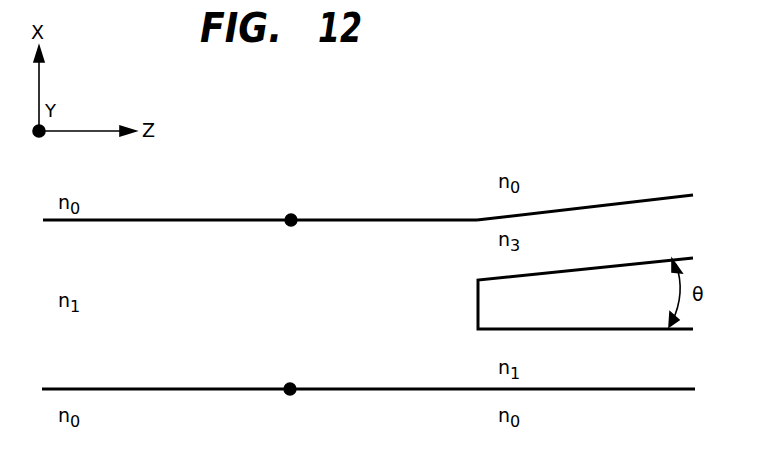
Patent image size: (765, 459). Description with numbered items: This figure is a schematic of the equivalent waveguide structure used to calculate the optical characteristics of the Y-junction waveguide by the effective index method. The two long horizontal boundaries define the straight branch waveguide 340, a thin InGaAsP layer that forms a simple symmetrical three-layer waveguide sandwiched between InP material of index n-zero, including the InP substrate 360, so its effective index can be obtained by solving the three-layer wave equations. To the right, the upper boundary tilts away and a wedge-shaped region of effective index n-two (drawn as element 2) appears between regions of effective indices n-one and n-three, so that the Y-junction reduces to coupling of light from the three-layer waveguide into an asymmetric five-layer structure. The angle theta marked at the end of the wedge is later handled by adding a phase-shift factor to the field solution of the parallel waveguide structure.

The straight branch waveguide 340 is at (209, 219).
The InP substrate 360 is at (652, 195).
The wedge region of refractive index n2 2 is at (585, 293).